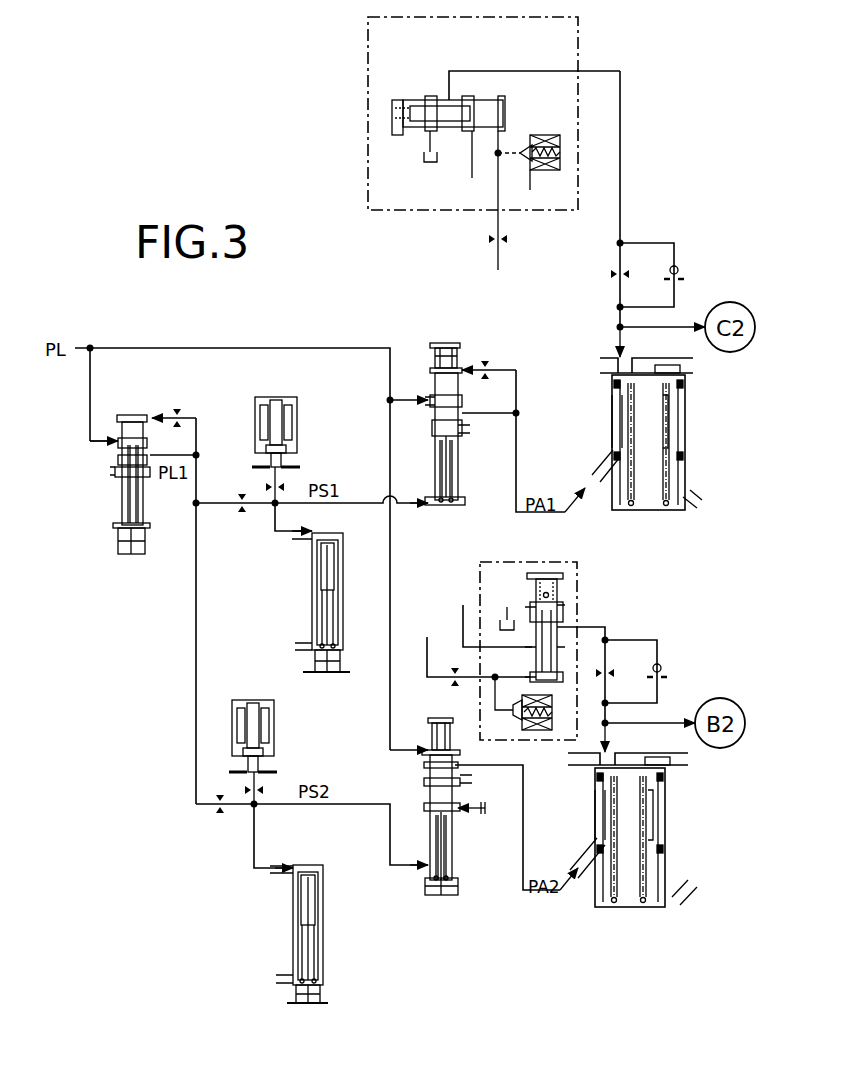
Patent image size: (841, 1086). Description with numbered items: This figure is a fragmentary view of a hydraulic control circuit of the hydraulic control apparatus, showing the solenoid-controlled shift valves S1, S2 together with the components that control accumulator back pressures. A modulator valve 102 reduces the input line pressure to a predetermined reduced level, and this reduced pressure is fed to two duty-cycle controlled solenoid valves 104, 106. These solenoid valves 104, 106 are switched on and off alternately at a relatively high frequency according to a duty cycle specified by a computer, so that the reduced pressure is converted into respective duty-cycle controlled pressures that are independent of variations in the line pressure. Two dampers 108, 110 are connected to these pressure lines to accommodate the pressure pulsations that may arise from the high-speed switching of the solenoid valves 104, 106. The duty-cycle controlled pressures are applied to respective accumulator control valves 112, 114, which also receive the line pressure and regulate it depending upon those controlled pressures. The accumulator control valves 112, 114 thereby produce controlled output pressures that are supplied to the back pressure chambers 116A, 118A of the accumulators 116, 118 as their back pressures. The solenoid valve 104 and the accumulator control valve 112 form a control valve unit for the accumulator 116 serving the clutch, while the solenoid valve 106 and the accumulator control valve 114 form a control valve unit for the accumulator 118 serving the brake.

The modulator valve 102 is at (113, 495).
The duty-cycle controlled solenoid valve 104 is at (305, 408).
The duty-cycle controlled solenoid valve 106 is at (283, 735).
The damper 108 is at (308, 580).
The damper 110 is at (285, 934).
The accumulator control valve 112 is at (466, 351).
The accumulator control valve 114 is at (421, 735).
The accumulator 116 is at (636, 514).
The back pressure chamber 116A is at (612, 420).
The accumulator 118 is at (624, 922).
The back pressure chamber 118A is at (597, 812).
The solenoid-controlled shift valve S1 is at (577, 590).
The solenoid-controlled shift valve S2 is at (366, 147).